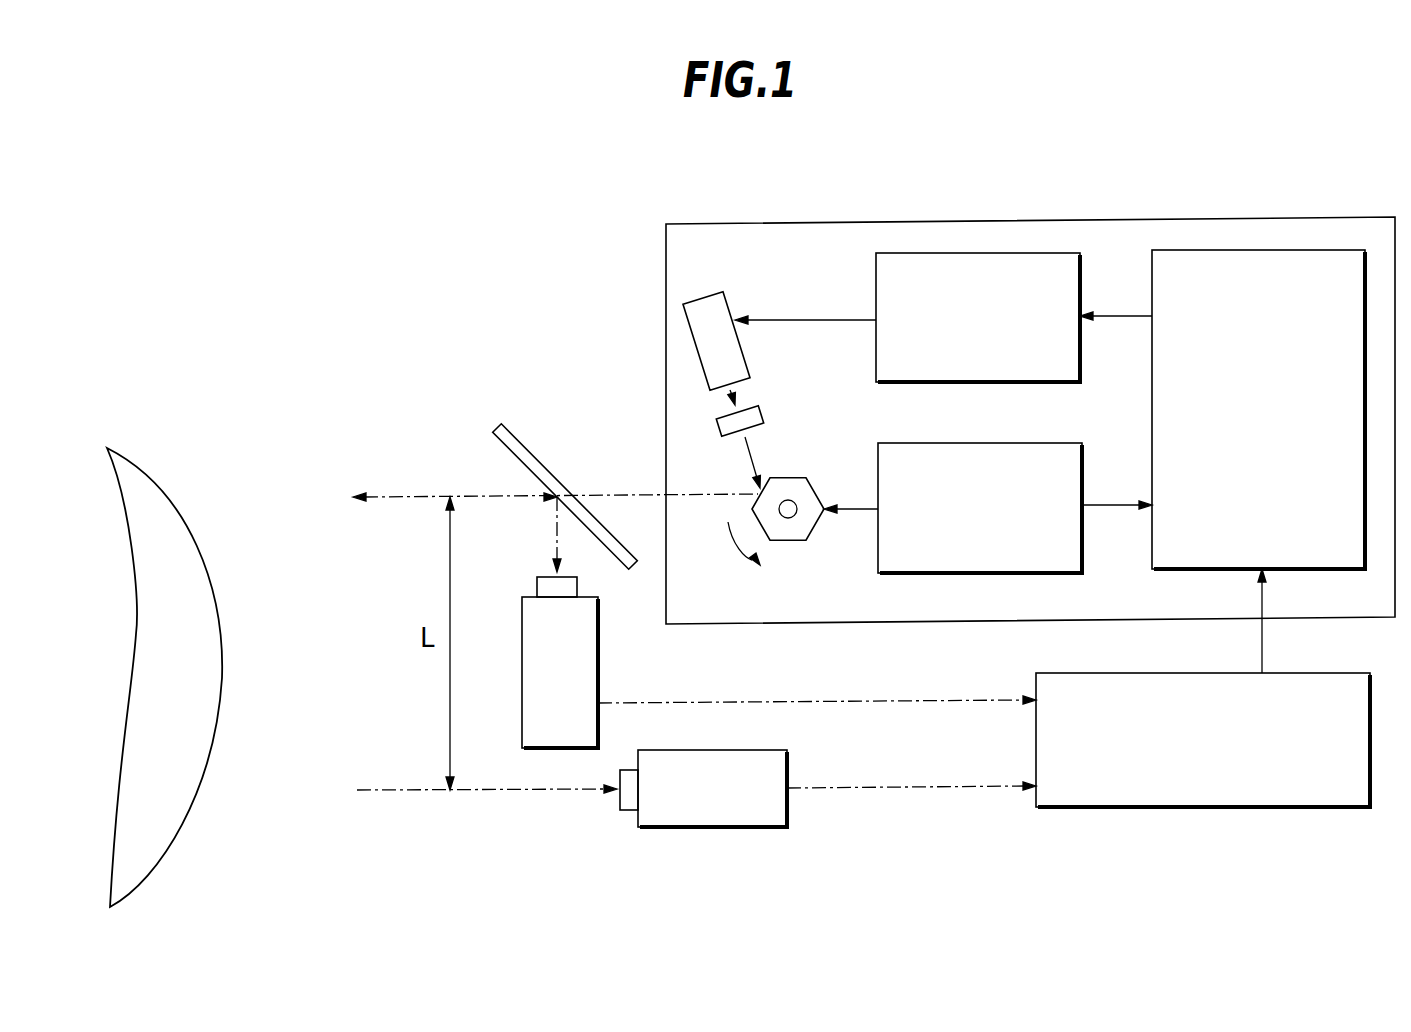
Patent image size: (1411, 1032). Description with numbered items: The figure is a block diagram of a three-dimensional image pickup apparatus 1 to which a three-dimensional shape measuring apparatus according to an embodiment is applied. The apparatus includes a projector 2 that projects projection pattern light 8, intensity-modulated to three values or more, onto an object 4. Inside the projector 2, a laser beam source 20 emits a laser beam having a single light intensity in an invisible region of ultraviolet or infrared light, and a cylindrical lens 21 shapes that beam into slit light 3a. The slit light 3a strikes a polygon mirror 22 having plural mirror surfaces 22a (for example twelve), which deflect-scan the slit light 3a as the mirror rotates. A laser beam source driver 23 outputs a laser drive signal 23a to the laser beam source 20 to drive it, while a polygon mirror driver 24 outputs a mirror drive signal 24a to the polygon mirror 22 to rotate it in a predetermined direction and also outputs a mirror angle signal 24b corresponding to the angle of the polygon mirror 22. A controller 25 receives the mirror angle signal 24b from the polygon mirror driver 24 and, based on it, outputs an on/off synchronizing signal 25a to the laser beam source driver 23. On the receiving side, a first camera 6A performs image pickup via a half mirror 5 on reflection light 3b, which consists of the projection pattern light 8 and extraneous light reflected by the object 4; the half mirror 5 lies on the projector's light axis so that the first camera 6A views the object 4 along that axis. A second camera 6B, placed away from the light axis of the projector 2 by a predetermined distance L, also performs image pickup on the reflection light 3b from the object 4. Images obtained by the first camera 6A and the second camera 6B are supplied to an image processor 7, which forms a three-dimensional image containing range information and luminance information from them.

The three-dimensional image pickup apparatus 1 is at (583, 238).
The projector 2 is at (703, 223).
The slit light 3a is at (755, 462).
The reflection light 3b is at (555, 530).
The object 4 is at (156, 467).
The half mirror 5 is at (509, 430).
The first camera 6A is at (598, 660).
The second camera 6B is at (713, 828).
The image processor 7 is at (1215, 807).
The projection pattern light 8 is at (408, 497).
The laser beam source 20 is at (730, 300).
The cylindrical lens 21 is at (716, 425).
The polygon mirror 22 is at (803, 543).
The mirror surfaces 22a is at (777, 541).
The laser beam source driver 23 is at (965, 253).
The laser drive signal 23a is at (848, 318).
The polygon mirror driver 24 is at (948, 443).
The mirror drive signal 24a is at (858, 498).
The mirror angle signal 24b is at (1112, 504).
The controller 25 is at (1250, 250).
The on/off synchronizing signal 25a is at (1112, 316).